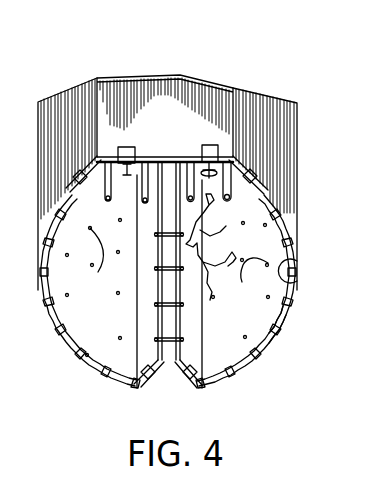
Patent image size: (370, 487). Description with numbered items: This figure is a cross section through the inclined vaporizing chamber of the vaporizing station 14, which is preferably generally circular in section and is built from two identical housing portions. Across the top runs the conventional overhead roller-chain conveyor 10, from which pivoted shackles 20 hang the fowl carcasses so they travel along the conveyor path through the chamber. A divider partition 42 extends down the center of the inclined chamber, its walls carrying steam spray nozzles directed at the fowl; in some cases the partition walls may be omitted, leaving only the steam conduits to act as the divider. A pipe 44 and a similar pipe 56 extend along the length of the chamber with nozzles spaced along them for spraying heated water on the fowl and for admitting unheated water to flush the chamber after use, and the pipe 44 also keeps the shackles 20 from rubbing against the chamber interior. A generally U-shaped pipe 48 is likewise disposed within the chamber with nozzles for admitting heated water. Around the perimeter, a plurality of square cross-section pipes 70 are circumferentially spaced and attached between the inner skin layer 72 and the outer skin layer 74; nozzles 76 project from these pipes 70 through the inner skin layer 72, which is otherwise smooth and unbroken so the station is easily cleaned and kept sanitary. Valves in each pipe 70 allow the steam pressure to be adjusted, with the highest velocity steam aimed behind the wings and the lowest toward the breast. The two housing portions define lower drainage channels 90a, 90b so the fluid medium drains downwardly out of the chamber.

The vaporizing station 14 is at (174, 72).
The overhead roller-chain conveyor 10 is at (143, 160).
The pivoted shackles 20 is at (187, 178).
The pipe 56 is at (77, 185).
The pipe 44 is at (255, 168).
The divider partition 42 is at (168, 250).
The U-shaped pipe 48 is at (187, 193).
The pipes 70 is at (72, 190).
The inner skin layer 72 is at (292, 287).
The outer skin layer 74 is at (286, 326).
The nozzles 76 is at (120, 336).
The lower drainage channel 90a is at (92, 372).
The lower drainage channel 90b is at (238, 370).